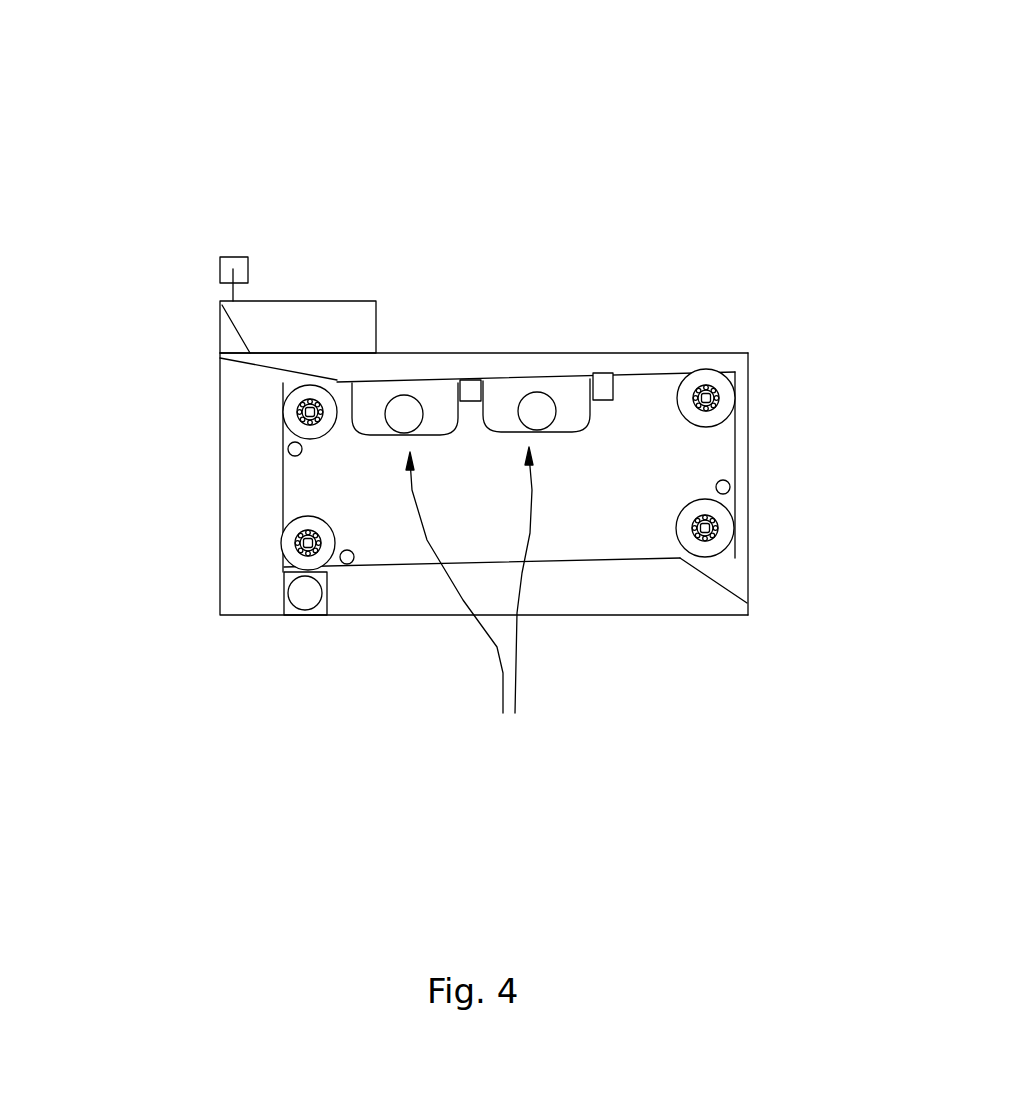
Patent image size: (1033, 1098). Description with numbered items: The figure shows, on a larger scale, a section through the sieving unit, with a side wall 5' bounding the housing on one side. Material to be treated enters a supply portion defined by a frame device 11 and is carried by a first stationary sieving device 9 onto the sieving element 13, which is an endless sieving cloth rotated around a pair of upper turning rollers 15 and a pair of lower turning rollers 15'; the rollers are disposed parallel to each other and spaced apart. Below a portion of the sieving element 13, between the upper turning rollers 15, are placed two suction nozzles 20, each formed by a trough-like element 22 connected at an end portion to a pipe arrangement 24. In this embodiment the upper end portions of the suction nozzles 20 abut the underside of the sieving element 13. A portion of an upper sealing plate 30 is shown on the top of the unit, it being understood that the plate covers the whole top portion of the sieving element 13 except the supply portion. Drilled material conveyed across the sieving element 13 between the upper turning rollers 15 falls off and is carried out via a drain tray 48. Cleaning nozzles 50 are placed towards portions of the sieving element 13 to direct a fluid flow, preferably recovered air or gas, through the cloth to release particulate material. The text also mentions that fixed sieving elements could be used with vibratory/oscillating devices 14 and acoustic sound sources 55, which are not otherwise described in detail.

The first stationary sieving device 9 is at (297, 370).
The frame device 11 is at (360, 300).
The trough-like element 22 is at (485, 397).
The vibratory/oscillating devices 14 is at (473, 387).
The pipe arrangement 24 is at (520, 412).
The upper sealing plate 30 is at (602, 353).
The acoustic sound sources 55 is at (603, 383).
The sieving element 13 is at (657, 373).
The upper turning rollers 15 is at (456, 349).
The side wall 5' is at (795, 484).
The cleaning nozzles 50 is at (288, 455).
The lower turning rollers 15' is at (473, 542).
The drain tray 48 is at (728, 592).
The suction nozzles 20 is at (469, 604).